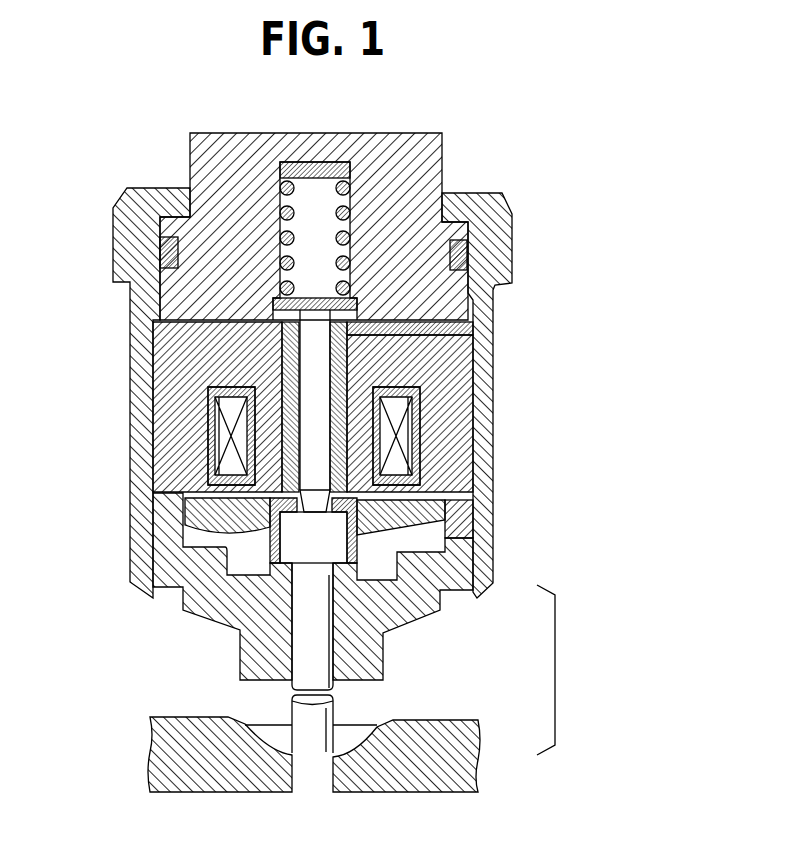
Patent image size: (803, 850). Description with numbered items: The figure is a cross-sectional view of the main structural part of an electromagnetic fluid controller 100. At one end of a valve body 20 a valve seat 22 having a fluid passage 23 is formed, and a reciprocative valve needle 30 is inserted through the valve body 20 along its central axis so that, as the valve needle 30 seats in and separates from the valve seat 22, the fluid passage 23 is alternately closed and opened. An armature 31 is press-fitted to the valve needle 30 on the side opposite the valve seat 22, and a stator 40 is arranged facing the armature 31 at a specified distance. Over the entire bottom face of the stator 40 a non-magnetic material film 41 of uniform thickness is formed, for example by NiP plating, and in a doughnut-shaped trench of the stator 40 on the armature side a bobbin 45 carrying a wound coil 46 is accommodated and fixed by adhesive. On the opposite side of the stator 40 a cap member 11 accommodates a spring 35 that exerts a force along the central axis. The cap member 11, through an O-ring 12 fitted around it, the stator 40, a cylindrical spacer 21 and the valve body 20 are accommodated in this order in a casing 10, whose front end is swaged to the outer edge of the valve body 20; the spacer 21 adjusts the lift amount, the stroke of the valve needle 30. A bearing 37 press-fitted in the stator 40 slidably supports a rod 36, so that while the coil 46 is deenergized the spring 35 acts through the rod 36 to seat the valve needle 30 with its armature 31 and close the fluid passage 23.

The electromagnetic fluid controller 100 is at (150, 139).
The casing 10 is at (503, 213).
The cap member 11 is at (226, 136).
The O-ring 12 is at (467, 250).
The valve body 20 is at (367, 660).
The cylindrical spacer 21 is at (462, 527).
The valve seat 22 is at (333, 757).
The fluid passage 23 is at (307, 780).
The valve needle 30 is at (383, 632).
The armature 31 is at (440, 505).
The spring 35 is at (372, 190).
The rod 36 is at (318, 370).
The bearing 37 is at (470, 330).
The stator 40 is at (458, 452).
The non-magnetic material film 41 is at (185, 492).
The bobbin 45 is at (407, 382).
The coil 46 is at (395, 415).